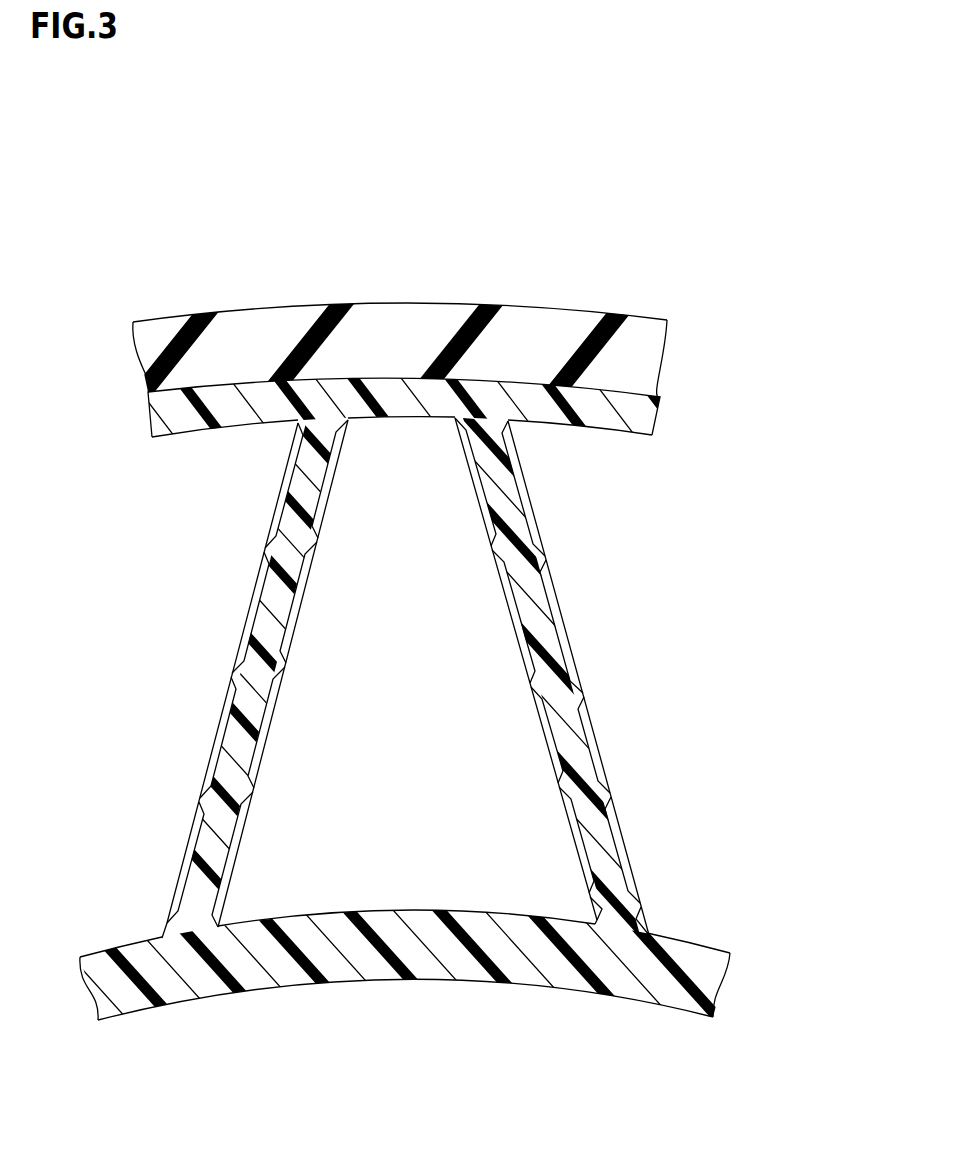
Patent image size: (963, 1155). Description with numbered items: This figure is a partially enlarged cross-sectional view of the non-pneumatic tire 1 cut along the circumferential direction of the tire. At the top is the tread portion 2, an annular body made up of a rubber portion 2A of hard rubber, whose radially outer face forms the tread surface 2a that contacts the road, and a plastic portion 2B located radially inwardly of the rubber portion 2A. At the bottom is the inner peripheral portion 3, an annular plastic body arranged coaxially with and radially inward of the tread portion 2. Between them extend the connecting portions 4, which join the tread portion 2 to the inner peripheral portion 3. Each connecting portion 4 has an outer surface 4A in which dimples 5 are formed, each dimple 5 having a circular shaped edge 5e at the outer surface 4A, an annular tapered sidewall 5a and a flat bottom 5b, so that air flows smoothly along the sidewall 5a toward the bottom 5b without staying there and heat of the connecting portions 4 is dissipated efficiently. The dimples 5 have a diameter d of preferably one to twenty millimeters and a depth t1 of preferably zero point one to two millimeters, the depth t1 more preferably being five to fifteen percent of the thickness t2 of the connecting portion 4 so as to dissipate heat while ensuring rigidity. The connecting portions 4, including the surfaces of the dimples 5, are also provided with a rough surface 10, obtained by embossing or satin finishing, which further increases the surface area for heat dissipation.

The tire 1 is at (523, 232).
The tread portion 2 is at (750, 340).
The tread surface 2a is at (318, 303).
The rubber portion 2A is at (637, 353).
The plastic portion 2B is at (637, 418).
The inner peripheral portion 3 is at (695, 955).
The connecting portion 4 is at (580, 540).
The outer surface of connecting portion 4A is at (233, 672).
The dimple 5 is at (122, 657).
The tapered sidewall 5a is at (308, 562).
The flat bottom 5b is at (293, 610).
The circular shaped edge 5e is at (267, 550).
The rough surface 10 is at (542, 557).
The diameter of dimple d is at (90, 777).
The depth of dimple t1 is at (547, 718).
The thickness of connecting portion t2 is at (563, 793).